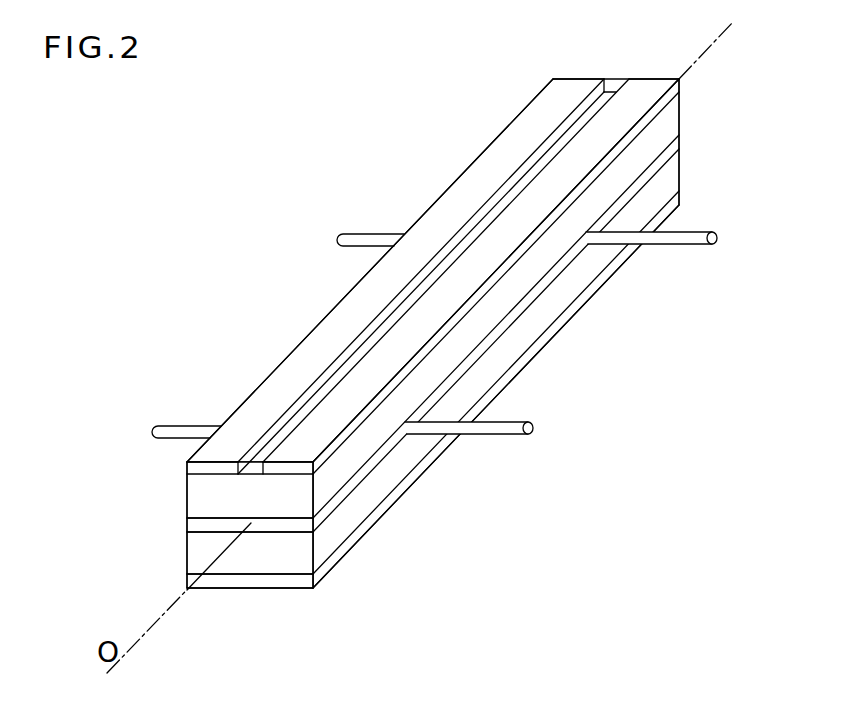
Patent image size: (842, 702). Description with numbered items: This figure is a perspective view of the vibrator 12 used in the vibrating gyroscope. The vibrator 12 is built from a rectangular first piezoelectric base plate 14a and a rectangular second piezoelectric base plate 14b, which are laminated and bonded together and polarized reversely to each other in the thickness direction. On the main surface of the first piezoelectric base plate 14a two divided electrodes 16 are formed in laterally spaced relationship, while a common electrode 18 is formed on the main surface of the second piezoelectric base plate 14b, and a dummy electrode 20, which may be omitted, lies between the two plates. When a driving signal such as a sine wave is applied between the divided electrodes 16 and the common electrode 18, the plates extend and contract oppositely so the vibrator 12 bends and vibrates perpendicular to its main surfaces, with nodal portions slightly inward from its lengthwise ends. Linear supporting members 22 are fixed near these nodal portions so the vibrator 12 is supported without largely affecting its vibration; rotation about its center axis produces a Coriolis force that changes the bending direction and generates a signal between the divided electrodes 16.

The vibrator 12 is at (472, 158).
The first piezoelectric base plate 14a is at (198, 497).
The second piezoelectric base plate 14b is at (198, 551).
The divided electrodes 16 is at (352, 387).
The common electrode 18 is at (255, 581).
The dummy electrode 20 is at (197, 524).
The supporting members 22 is at (366, 240).